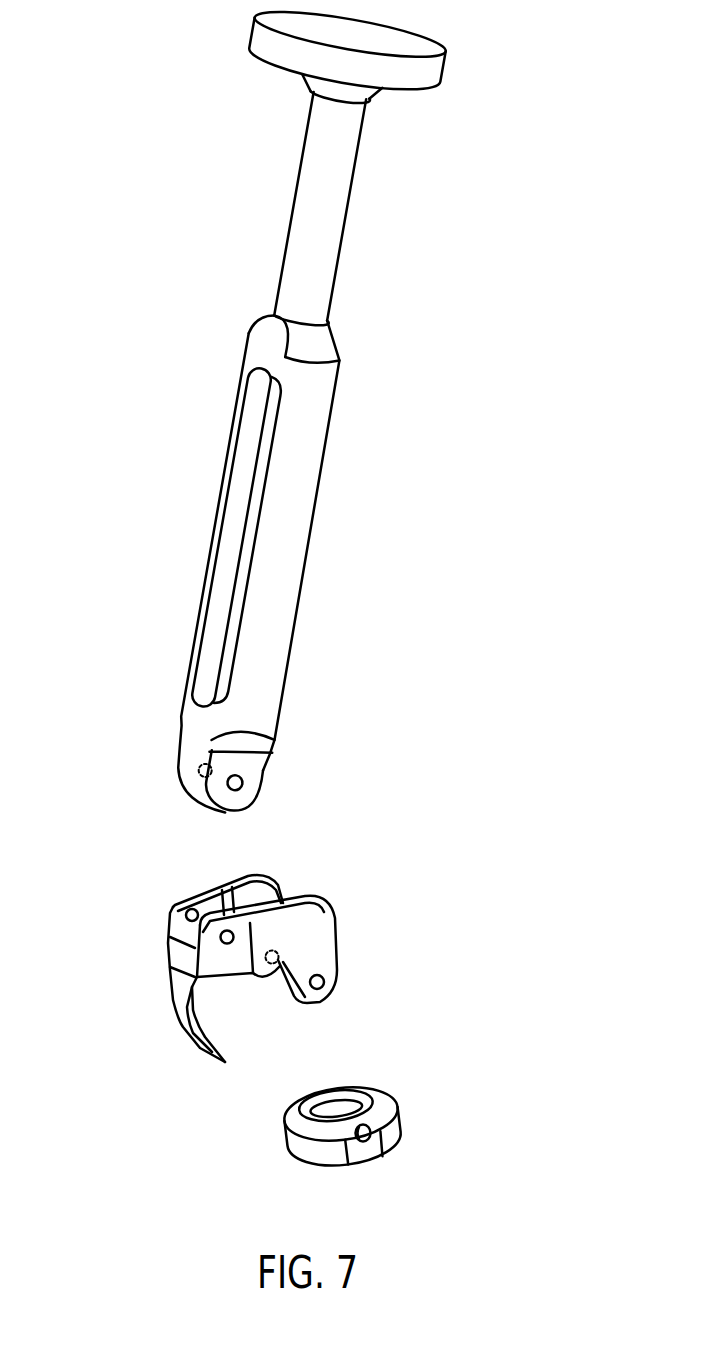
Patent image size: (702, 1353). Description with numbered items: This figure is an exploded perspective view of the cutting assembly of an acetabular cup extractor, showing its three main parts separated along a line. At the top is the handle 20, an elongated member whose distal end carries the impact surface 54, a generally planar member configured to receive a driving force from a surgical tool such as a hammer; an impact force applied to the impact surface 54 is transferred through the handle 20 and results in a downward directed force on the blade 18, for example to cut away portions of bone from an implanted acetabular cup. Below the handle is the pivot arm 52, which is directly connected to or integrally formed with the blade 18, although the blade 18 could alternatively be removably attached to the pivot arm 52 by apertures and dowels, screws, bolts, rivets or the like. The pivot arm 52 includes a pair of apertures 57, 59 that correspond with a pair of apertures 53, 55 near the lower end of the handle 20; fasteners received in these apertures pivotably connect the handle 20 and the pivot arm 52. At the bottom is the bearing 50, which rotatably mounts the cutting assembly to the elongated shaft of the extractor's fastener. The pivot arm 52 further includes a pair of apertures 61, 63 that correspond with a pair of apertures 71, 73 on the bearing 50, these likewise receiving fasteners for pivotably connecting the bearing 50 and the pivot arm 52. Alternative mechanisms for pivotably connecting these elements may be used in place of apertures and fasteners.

The blade 18 is at (176, 1016).
The handle 20 is at (224, 470).
The bearing 50 is at (385, 1095).
The pivot arm 52 is at (302, 897).
The aperture 53 is at (200, 767).
The impact surface 54 is at (422, 37).
The aperture 55 is at (243, 785).
The aperture 57 is at (188, 910).
The aperture 59 is at (232, 931).
The aperture 61 is at (279, 957).
The aperture 63 is at (324, 982).
The aperture 71 is at (338, 1101).
The aperture 73 is at (370, 1142).